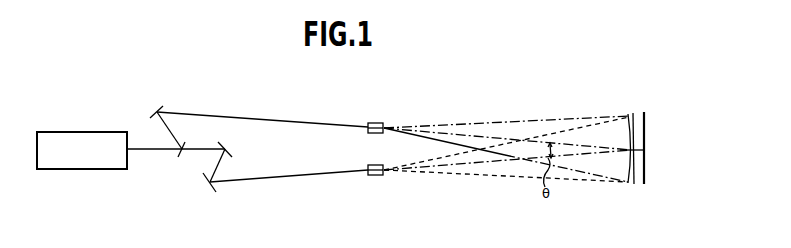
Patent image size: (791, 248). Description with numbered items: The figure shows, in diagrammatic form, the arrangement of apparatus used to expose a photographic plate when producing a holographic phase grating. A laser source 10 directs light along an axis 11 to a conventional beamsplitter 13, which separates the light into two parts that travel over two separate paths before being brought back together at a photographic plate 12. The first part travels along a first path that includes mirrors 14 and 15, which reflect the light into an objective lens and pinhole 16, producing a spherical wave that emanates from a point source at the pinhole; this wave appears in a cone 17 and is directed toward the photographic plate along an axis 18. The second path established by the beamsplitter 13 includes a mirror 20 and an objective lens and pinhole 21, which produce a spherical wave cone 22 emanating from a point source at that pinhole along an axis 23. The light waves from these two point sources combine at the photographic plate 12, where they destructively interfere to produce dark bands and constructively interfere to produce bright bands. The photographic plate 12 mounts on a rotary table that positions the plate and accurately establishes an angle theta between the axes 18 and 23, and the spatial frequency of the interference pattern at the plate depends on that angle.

The laser source 10 is at (63, 131).
The axis 11 is at (153, 151).
The photographic plate 12 is at (646, 117).
The beamsplitter 13 is at (179, 158).
The mirror 14 is at (233, 151).
The mirror 15 is at (213, 192).
The objective lens and pinhole 16 is at (376, 176).
The cone 17 is at (514, 178).
The axis 18 is at (462, 164).
The mirror 20 is at (160, 107).
The objective lens and pinhole 21 is at (377, 123).
The spherical wave cone 22 is at (512, 121).
The axis 23 is at (461, 135).